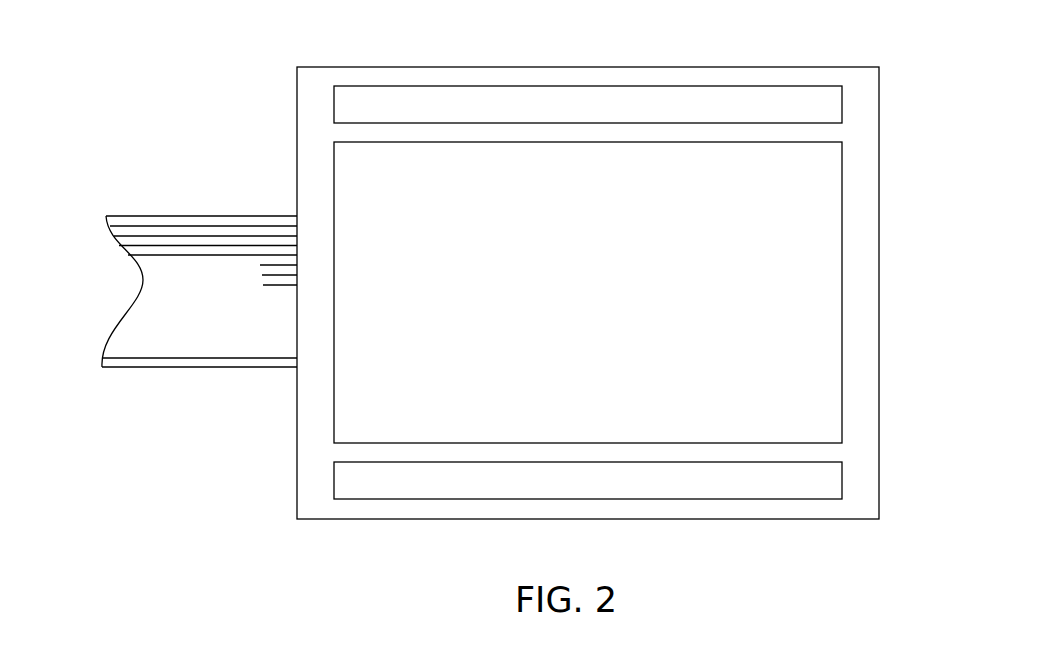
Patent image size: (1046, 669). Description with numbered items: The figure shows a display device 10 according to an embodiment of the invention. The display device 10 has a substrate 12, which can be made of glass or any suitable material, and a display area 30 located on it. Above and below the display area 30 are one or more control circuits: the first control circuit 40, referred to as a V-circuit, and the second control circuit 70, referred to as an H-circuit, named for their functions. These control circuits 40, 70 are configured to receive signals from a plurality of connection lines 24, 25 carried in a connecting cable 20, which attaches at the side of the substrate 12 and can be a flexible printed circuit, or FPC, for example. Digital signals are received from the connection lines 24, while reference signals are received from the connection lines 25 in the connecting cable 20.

The display device 10 is at (623, 260).
The substrate 12 is at (872, 322).
The connecting cable 20 is at (173, 285).
The connection lines 24 is at (167, 223).
The connection lines 25 is at (210, 358).
The display area 30 is at (580, 312).
The first control circuit 40 is at (688, 92).
The second control circuit 70 is at (555, 492).